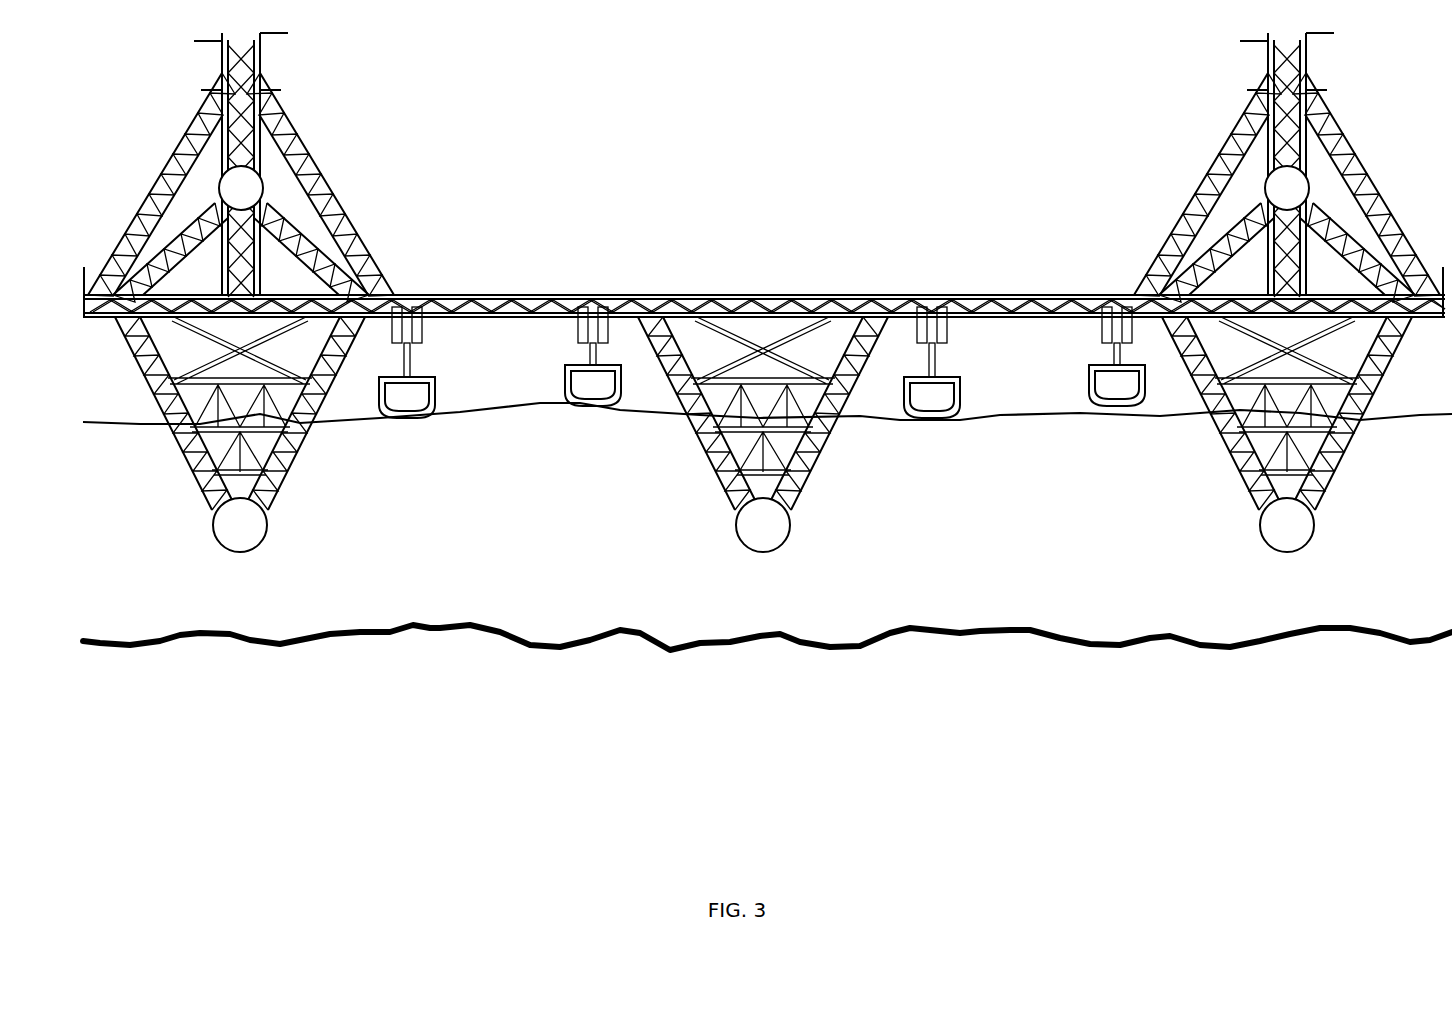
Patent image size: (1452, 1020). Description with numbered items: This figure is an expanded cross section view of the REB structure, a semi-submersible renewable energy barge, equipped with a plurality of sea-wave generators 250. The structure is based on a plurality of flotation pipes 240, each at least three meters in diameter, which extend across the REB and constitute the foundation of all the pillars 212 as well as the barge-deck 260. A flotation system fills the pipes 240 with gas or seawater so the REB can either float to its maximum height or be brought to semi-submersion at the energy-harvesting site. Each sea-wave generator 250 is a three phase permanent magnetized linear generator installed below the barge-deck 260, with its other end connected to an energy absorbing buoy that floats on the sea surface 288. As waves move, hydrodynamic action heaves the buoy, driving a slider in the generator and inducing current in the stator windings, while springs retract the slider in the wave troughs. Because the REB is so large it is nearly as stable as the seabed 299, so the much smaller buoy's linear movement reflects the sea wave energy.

The pillar 212 is at (262, 57).
The flotation pipe 240 is at (235, 553).
The sea-wave generator 250 is at (397, 398).
The barge-deck 260 is at (837, 293).
The sea surface 288 is at (147, 424).
The seabed 299 is at (447, 637).